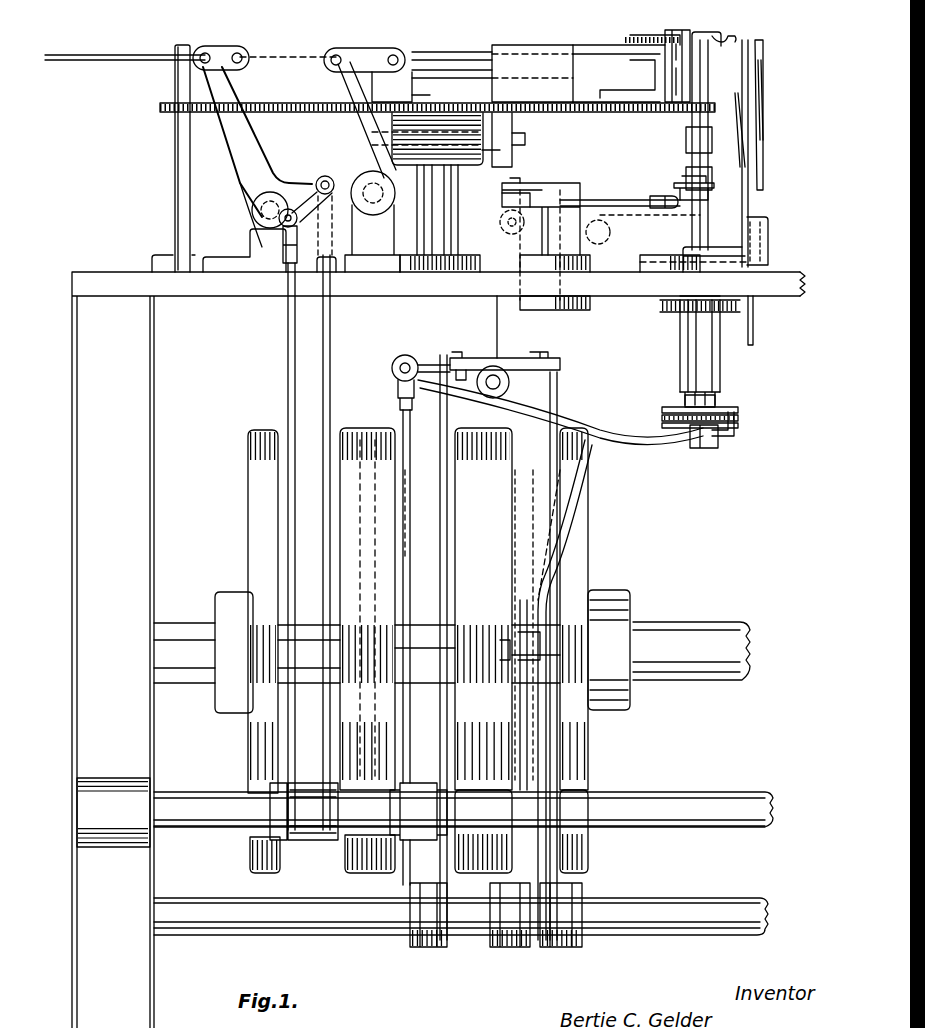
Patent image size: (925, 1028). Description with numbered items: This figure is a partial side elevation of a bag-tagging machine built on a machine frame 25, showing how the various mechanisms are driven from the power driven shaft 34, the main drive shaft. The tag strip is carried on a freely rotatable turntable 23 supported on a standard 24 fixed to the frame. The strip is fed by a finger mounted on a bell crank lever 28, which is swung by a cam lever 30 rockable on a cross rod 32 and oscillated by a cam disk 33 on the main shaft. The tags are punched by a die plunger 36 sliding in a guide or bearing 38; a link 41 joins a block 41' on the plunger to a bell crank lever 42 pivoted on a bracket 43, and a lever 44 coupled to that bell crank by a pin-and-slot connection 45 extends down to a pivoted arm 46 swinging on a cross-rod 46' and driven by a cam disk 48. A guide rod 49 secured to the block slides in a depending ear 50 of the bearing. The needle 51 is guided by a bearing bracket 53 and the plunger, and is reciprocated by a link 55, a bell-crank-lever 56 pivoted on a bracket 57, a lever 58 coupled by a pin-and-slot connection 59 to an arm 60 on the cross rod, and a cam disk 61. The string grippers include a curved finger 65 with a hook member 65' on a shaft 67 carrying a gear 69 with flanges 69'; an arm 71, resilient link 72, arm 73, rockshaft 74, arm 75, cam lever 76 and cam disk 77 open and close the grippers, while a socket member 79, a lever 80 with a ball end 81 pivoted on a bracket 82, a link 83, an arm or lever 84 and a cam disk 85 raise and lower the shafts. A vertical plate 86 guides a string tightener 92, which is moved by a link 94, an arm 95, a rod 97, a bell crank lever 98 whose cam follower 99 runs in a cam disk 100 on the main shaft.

The turntable 23 is at (262, 94).
The standard 24 is at (424, 208).
The machine frame 25 is at (140, 337).
The bell crank lever 28 is at (620, 66).
The cam lever 30 is at (560, 560).
The cross rod 32 is at (642, 900).
The cam disk 33 is at (578, 750).
The power driven shaft 34 is at (706, 666).
The die plunger 36 is at (432, 62).
The guide or bearing 38 is at (524, 68).
The link 41 is at (368, 60).
The block 41' is at (435, 90).
The bell crank lever 42 is at (340, 124).
The bracket 43 is at (366, 250).
The lever 44 is at (286, 392).
The pin-and-slot connection 45 is at (278, 220).
The pivoted arm 46 is at (294, 830).
The cross-rod 46' is at (463, 789).
The cam disk 48 is at (248, 552).
The guide rod 49 is at (518, 140).
The depending ear 50 is at (516, 150).
The needle 51 is at (77, 58).
The bearing bracket 53 is at (176, 175).
The link 55 is at (234, 48).
The bell-crank-lever 56 is at (236, 150).
The bracket 57 is at (258, 260).
The lever 58 is at (332, 373).
The pin-and-slot connection 59 is at (318, 178).
The arm 60 is at (322, 840).
The cam disk 61 is at (344, 874).
The curved finger 65 is at (714, 141).
The hook member 65' is at (751, 28).
The shaft 67 is at (700, 212).
The gear 69 is at (723, 414).
The flanges 69' is at (730, 410).
The arm 71 is at (678, 182).
The resilient link 72 is at (638, 210).
The arm 73 is at (526, 190).
The rockshaft 74 is at (618, 198).
The arm 75 is at (506, 358).
The cam lever 76 is at (440, 430).
The cam disk 77 is at (470, 870).
The socket member 79 is at (696, 448).
The lever 80 is at (417, 352).
The ball end 81 is at (730, 434).
The bracket 82 is at (495, 308).
The link 83 is at (412, 582).
The arm or lever 84 is at (416, 780).
The cam disk 85 is at (395, 868).
The vertical plate 86 is at (750, 200).
The string tightener 92 is at (755, 318).
The link 94 is at (768, 238).
The arm 95 is at (678, 252).
The rod 97 is at (560, 545).
The bell crank lever 98 is at (530, 776).
The cam follower 99 is at (545, 655).
The cam disk 100 is at (530, 730).